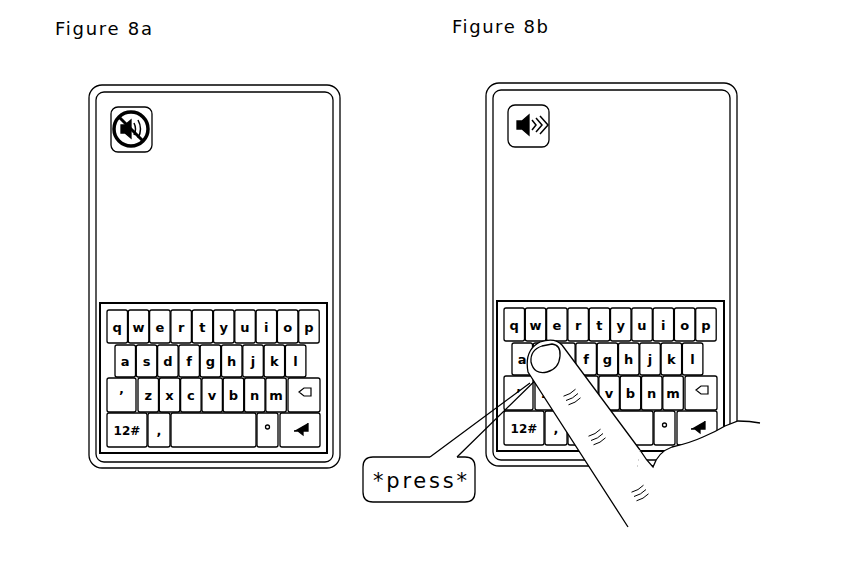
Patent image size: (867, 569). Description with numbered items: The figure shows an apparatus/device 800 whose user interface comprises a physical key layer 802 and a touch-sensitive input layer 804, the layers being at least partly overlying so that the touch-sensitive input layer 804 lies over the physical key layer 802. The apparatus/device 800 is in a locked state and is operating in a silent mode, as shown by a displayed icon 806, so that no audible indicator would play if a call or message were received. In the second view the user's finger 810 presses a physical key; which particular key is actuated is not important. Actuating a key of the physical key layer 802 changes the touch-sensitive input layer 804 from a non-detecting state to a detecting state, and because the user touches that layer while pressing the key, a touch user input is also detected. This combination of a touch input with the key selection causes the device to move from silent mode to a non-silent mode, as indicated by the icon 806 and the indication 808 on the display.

In FIG. 8a, the apparatus/device 800 is at (287, 72).
In FIG. 8b, the apparatus/device 800 is at (682, 62).
In FIG. 8a, the physical key layer 802 is at (313, 387).
In FIG. 8b, the physical key layer 802 is at (713, 382).
In FIG. 8a, the touch-sensitive input layer 804 is at (320, 303).
In FIG. 8b, the touch-sensitive input layer 804 is at (708, 302).
In FIG. 8a, the displayed icon 806 is at (112, 125).
In FIG. 8b, the displayed icon 806 is at (510, 122).
In FIG. 8b, the display indication 808 is at (503, 167).
In FIG. 8b, the user finger 810 is at (603, 462).